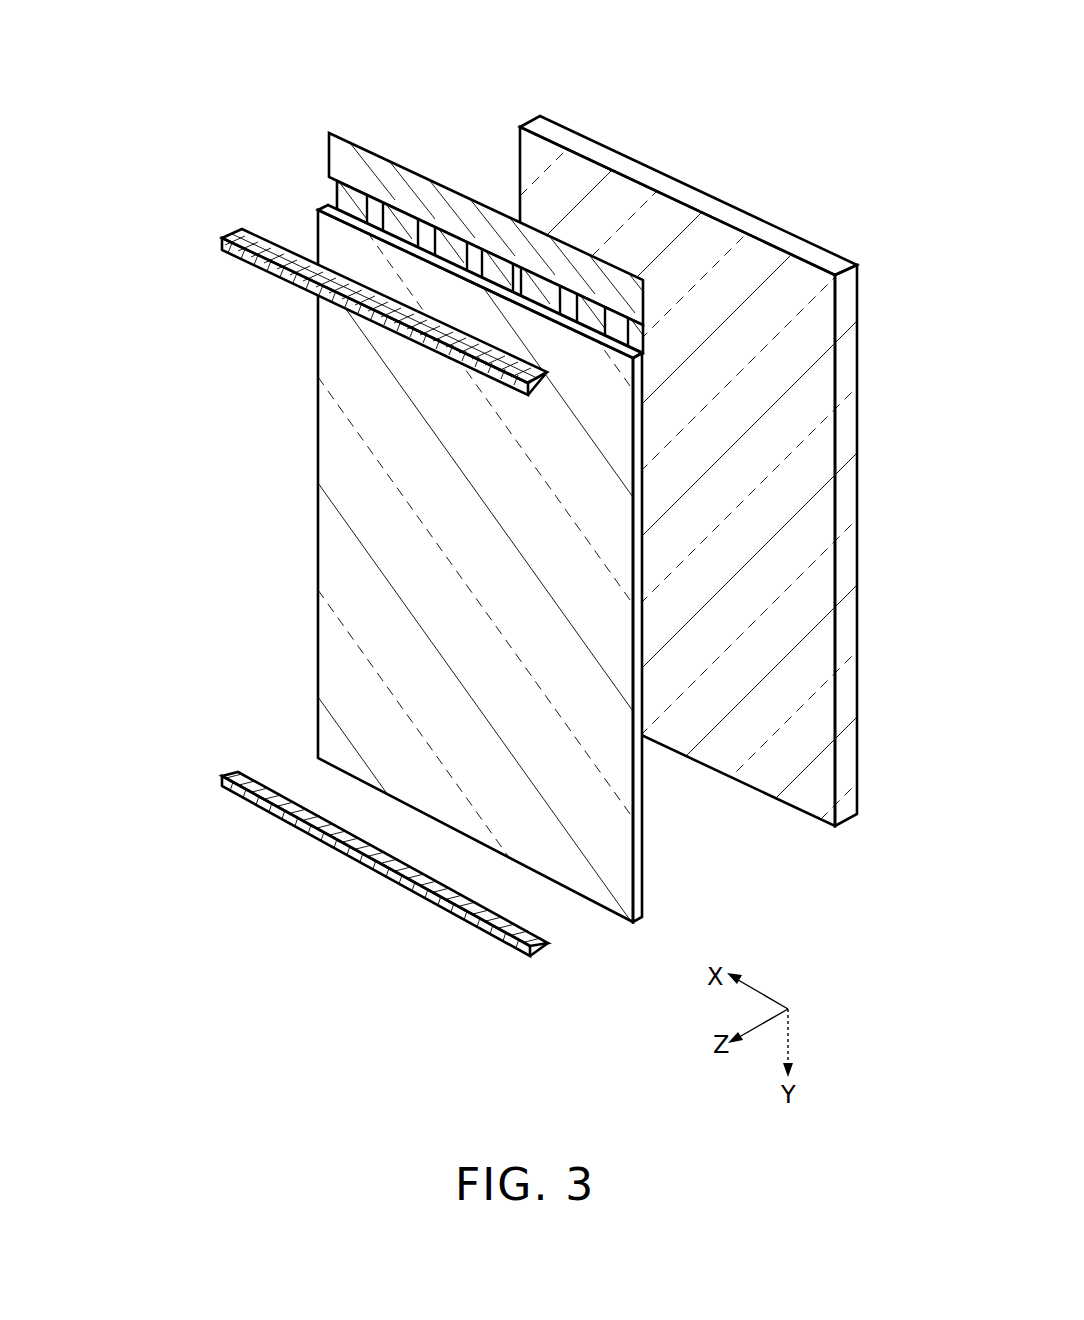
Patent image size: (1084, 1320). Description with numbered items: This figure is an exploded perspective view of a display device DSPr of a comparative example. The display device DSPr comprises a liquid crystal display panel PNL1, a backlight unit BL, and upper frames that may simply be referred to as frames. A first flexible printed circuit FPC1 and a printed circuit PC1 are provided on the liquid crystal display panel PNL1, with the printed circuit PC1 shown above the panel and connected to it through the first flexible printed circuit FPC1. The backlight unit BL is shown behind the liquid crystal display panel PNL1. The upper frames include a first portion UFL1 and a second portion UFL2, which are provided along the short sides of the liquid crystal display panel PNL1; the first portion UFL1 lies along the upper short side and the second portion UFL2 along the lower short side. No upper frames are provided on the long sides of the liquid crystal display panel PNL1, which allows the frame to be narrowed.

The display device DSPr is at (792, 95).
The liquid crystal display panel PNL1 is at (613, 898).
The backlight unit BL is at (704, 192).
The printed circuit PC1 is at (367, 142).
The first flexible printed circuit FPC1 is at (347, 200).
The first portion UFL1 is at (222, 240).
The second portion UFL2 is at (222, 778).